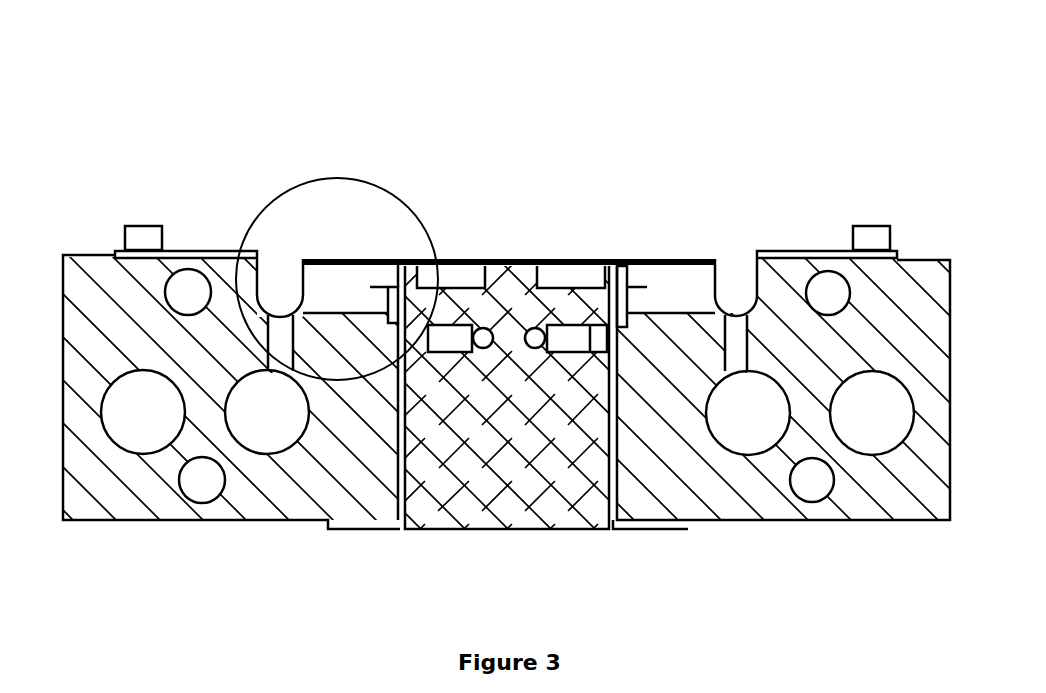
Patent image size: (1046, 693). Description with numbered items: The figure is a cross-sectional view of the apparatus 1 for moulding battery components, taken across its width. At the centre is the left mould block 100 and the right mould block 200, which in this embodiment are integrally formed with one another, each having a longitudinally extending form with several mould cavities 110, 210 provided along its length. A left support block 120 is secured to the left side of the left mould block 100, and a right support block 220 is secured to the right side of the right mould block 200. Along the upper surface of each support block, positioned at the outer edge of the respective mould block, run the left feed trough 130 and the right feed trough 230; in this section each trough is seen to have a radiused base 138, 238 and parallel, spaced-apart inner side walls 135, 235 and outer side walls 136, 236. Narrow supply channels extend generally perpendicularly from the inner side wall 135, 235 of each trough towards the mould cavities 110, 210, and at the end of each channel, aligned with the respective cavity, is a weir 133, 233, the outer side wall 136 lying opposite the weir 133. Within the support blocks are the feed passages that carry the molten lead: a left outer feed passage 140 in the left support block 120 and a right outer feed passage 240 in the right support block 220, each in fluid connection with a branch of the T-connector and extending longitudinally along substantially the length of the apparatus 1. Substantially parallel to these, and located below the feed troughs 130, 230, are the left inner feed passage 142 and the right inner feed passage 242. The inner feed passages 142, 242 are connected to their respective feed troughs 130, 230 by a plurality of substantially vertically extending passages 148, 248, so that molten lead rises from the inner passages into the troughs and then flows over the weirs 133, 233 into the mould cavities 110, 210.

The apparatus 1 is at (513, 92).
The left mould block 100 is at (443, 530).
The mould cavities 110 is at (461, 280).
The left support block 120 is at (177, 522).
The left feed trough 130 is at (332, 285).
The weir 133 is at (392, 293).
The inner side wall 135 is at (312, 268).
The outer side wall 136 is at (245, 275).
The radiused base 138 is at (345, 285).
The left outer feed passage 140 is at (135, 437).
The left inner feed passage 142 is at (275, 433).
The vertically extending passages 148 is at (213, 268).
The right mould block 200 is at (565, 530).
The mould cavities 210 is at (571, 280).
The right support block 220 is at (762, 523).
The right feed trough 230 is at (672, 288).
The weir 233 is at (621, 280).
The inner side wall 235 is at (704, 268).
The outer side wall 236 is at (748, 278).
The radiused base 238 is at (740, 343).
The right outer feed passage 240 is at (870, 437).
The right inner feed passage 242 is at (740, 433).
The vertically extending passages 248 is at (745, 322).